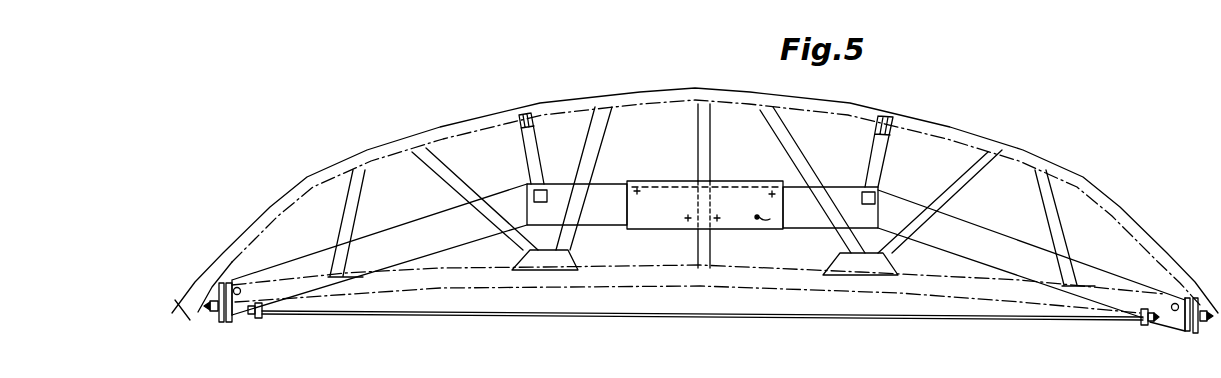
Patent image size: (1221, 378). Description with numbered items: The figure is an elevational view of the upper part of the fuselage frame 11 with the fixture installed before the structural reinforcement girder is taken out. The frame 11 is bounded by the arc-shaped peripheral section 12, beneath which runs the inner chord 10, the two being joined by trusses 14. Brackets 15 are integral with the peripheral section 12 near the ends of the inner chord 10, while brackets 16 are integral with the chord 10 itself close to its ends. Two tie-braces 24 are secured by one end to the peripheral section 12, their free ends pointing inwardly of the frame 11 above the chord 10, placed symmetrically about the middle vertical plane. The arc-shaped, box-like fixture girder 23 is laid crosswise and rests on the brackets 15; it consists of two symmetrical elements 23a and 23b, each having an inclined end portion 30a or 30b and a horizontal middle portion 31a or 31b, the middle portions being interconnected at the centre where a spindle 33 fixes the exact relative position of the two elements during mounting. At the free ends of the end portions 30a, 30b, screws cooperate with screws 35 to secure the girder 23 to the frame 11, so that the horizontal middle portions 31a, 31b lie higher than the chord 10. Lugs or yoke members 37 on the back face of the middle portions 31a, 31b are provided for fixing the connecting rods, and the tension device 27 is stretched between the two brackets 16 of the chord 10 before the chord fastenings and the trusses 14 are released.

The inner chord 10 is at (790, 283).
The frame 11 is at (306, 164).
The peripheral section 12 is at (685, 97).
The trusses 14 is at (790, 148).
The brackets 15 is at (213, 319).
The brackets 16 is at (262, 320).
The girder 23 is at (443, 240).
The element 23a is at (388, 180).
The element 23b is at (1028, 208).
The tie-braces 24 is at (528, 147).
The tension device 27 is at (630, 312).
The end portion 30a is at (308, 266).
The end portion 30b is at (1108, 248).
The middle portion 31a is at (605, 185).
The middle portion 31b is at (813, 186).
The spindle 33 is at (757, 220).
The screws 35 is at (205, 307).
The lugs or yoke members 37 is at (548, 196).